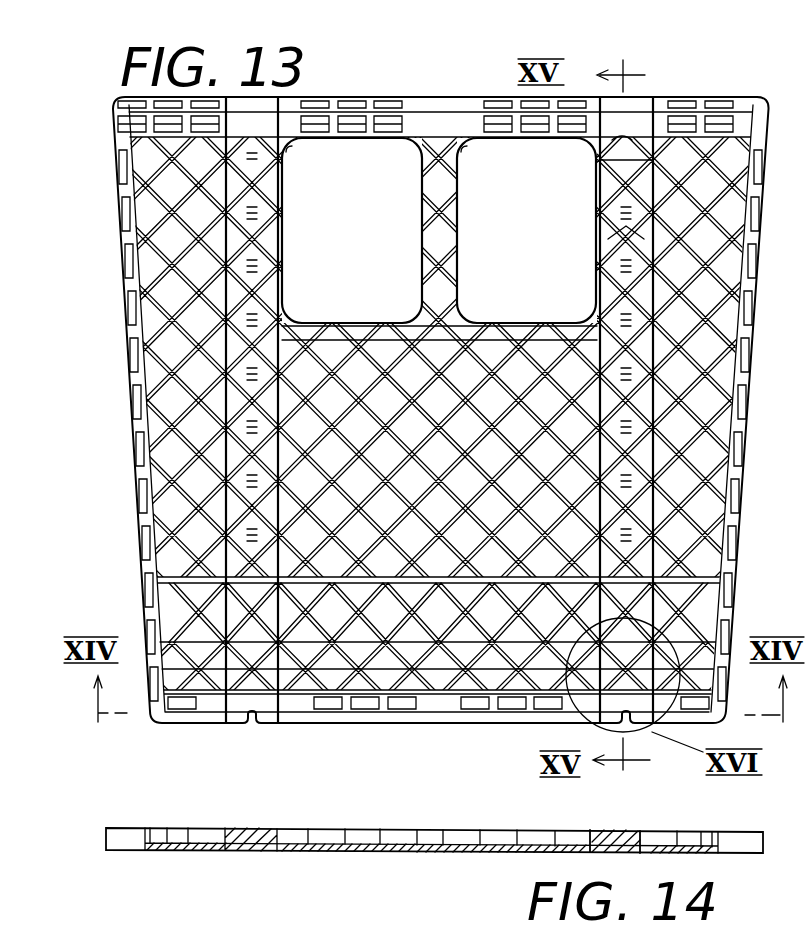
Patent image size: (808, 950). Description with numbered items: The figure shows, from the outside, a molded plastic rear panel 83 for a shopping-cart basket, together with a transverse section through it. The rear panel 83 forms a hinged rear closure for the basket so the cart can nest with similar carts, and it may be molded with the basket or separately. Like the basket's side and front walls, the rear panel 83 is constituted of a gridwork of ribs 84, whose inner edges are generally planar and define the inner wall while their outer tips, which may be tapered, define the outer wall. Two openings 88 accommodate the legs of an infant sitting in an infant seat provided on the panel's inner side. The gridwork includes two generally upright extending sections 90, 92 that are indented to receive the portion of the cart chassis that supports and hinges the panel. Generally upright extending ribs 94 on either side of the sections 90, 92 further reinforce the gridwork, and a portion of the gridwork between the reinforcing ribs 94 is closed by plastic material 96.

In FIG. 13, the rear panel 83 is at (104, 262).
In FIG. 14, the rear panel 83 is at (425, 860).
In FIG. 13, the ribs 84 is at (182, 462).
In FIG. 13, the openings 88 is at (422, 230).
In FIG. 13, the upright extending section 90 is at (255, 177).
In FIG. 14, the upright extending section 90 is at (248, 830).
In FIG. 13, the upright extending section 92 is at (605, 172).
In FIG. 14, the upright extending section 92 is at (612, 832).
In FIG. 13, the upright extending ribs 94 is at (607, 142).
In FIG. 14, the upright extending ribs 94 is at (588, 832).
In FIG. 13, the closed portion of gridwork 96 is at (610, 240).